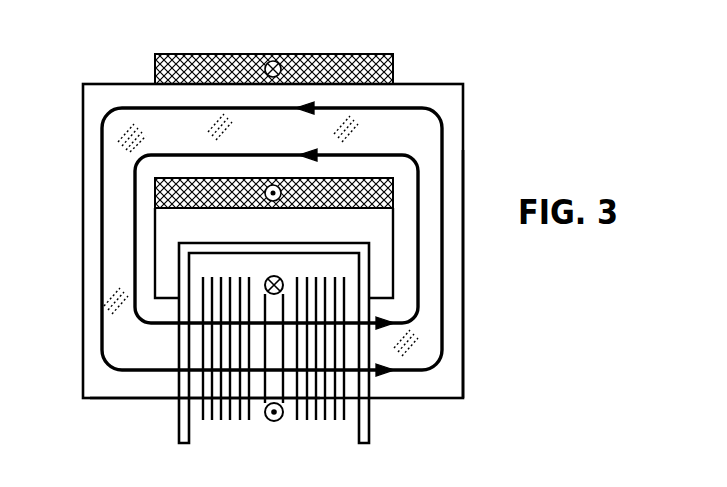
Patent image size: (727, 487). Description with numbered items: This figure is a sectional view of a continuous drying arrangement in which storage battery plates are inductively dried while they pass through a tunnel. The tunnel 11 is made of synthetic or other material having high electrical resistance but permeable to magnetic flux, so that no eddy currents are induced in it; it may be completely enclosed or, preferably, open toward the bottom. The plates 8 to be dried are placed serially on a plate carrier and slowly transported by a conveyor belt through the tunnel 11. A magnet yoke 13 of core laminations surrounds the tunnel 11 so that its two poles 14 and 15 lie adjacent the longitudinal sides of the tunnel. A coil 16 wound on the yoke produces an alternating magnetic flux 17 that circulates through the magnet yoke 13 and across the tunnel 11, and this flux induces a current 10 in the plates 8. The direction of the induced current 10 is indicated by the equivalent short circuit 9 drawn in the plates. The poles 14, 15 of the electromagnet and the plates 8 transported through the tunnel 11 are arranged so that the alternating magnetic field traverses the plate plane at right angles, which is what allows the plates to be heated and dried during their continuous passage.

The plates 8 is at (200, 412).
The equivalent short circuit 9 is at (270, 422).
The current 10 is at (279, 421).
The tunnel 11 is at (369, 445).
The magnet yoke 13 is at (116, 94).
The pole 14 is at (130, 383).
The pole 15 is at (437, 383).
The coil 16 is at (200, 53).
The alternating magnetic flux 17 is at (410, 106).